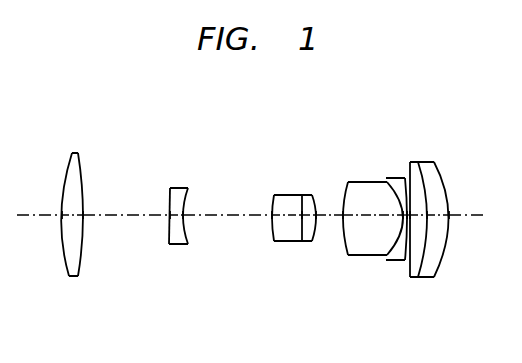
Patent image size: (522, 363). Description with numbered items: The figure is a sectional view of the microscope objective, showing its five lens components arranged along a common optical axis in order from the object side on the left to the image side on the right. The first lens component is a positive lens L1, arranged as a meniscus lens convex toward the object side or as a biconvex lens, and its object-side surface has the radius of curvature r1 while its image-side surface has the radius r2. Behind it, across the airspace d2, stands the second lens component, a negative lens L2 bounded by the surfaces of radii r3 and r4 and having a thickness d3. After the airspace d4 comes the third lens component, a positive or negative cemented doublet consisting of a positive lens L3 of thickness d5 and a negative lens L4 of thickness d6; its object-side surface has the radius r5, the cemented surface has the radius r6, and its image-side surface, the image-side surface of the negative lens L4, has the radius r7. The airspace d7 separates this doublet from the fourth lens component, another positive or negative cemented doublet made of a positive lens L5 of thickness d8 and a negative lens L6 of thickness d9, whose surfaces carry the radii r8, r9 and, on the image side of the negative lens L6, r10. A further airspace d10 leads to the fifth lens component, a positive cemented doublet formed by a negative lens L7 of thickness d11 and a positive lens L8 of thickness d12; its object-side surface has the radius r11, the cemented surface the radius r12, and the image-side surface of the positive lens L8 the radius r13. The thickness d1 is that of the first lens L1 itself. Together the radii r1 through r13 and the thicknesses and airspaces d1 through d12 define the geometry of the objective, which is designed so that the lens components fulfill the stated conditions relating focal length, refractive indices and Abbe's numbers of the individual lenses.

The positive lens L1 is at (68, 216).
The negative lens L2 is at (184, 204).
The positive lens L3 is at (272, 218).
The negative lens L4 is at (309, 218).
The positive lens L5 is at (365, 219).
The negative lens L6 is at (383, 219).
The negative lens L7 is at (423, 226).
The positive lens L8 is at (459, 227).
The radius of curvature of object-side surface of first lens component r1 is at (56, 198).
The radius of curvature of lens surface r2 is at (87, 198).
The radius of curvature of lens surface r3 is at (162, 182).
The radius of curvature of lens surface r4 is at (192, 182).
The radius of curvature of lens surface r5 is at (258, 181).
The radius of curvature of lens surface r6 is at (286, 181).
The radius of curvature of image-side surface of third lens component r7 is at (307, 181).
The radius of curvature of lens surface r8 is at (337, 188).
The radius of curvature of lens surface r9 is at (378, 188).
The radius of curvature of image-side surface of fourth lens component r10 is at (394, 190).
The radius of curvature of lens surface r11 is at (408, 183).
The radius of curvature of lens surface r12 is at (431, 159).
The radius of curvature of image-side surface of fifth lens component r13 is at (453, 163).
The lens thickness d1 is at (62, 231).
The airspace d2 is at (126, 231).
The lens thickness d3 is at (170, 251).
The airspace d4 is at (227, 232).
The lens thickness d5 is at (276, 251).
The lens thickness d6 is at (301, 251).
The airspace d7 is at (329, 234).
The lens thickness d8 is at (373, 234).
The lens thickness d9 is at (391, 255).
The airspace d10 is at (399, 274).
The lens thickness d11 is at (432, 274).
The lens thickness d12 is at (450, 240).